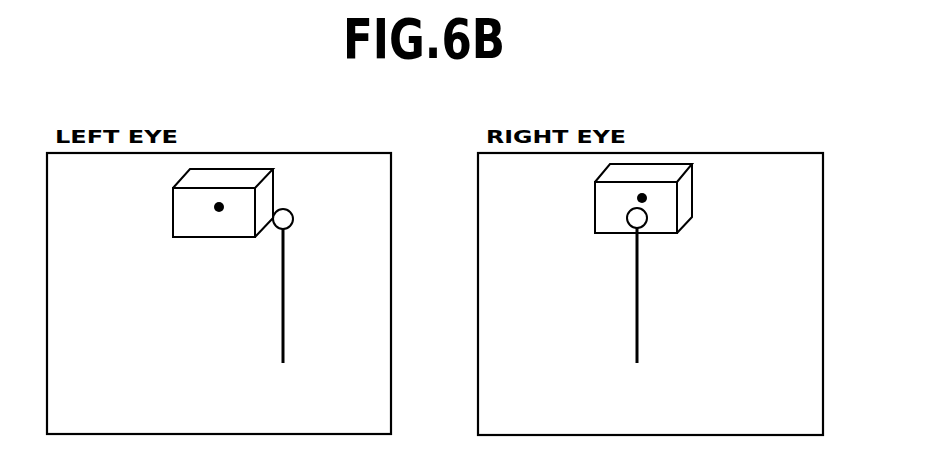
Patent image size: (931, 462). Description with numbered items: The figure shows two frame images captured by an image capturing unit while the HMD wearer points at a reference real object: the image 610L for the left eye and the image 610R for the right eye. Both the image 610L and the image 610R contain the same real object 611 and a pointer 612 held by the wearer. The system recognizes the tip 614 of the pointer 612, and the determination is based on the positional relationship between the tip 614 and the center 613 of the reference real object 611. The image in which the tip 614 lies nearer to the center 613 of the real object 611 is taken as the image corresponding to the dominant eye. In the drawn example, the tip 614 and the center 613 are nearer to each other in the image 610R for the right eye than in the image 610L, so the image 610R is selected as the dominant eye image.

The image for the left eye 610L is at (353, 153).
The image for the right eye 610R is at (767, 153).
The real object 611 is at (245, 177).
The pointer 612 is at (286, 312).
The center of the reference real object 613 is at (219, 212).
The tip of the pointer 614 is at (293, 219).